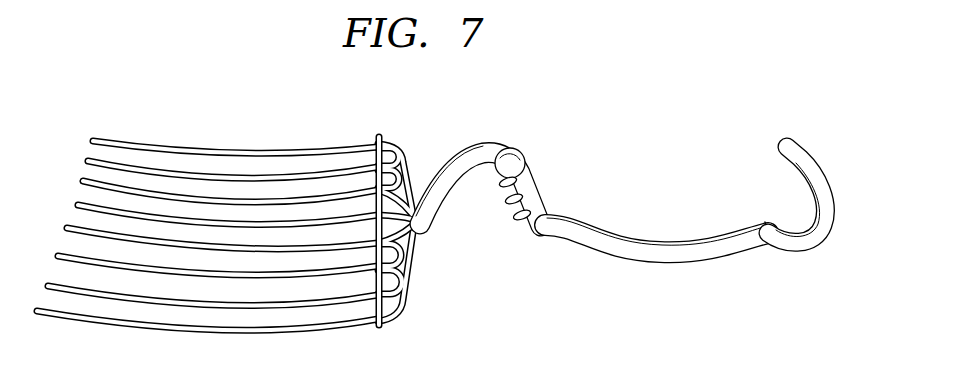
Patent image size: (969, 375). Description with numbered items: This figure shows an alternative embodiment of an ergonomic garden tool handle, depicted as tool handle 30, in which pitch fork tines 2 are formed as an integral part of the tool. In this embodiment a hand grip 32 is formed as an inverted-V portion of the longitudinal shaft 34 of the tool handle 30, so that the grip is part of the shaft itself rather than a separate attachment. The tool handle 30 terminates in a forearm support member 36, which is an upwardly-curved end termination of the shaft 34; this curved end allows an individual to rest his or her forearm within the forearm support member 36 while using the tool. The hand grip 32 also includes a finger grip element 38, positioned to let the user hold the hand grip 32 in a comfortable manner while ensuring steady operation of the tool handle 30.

The pitch fork tines 2 is at (163, 143).
The tool handle 30 is at (632, 222).
The hand grip 32 is at (490, 149).
The longitudinal shaft 34 is at (621, 236).
The forearm support member 36 is at (795, 149).
The finger grip element 38 is at (514, 224).